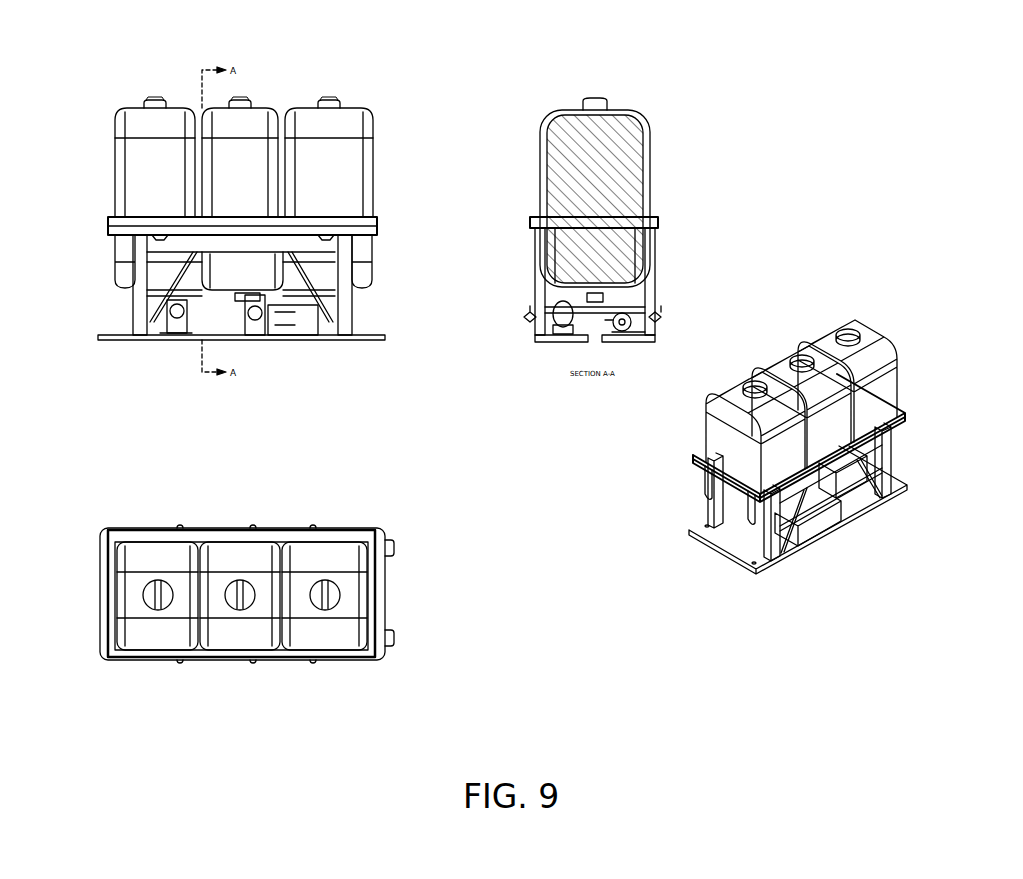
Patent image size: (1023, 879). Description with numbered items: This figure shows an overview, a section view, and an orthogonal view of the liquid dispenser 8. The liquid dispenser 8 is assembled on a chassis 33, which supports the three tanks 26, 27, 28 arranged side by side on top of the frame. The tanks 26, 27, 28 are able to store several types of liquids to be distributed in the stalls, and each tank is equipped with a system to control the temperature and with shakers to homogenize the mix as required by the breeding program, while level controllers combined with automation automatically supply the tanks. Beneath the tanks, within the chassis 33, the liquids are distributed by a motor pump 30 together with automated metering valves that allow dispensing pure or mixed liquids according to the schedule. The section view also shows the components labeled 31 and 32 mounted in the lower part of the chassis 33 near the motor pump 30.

The liquid dispenser 8 is at (115, 110).
The chassis 33 is at (112, 232).
The motor pump 30 is at (538, 340).
The pump 31 is at (650, 313).
The valve 32 is at (662, 320).
The tank 26 is at (145, 538).
The tank 27 is at (232, 538).
The tank 28 is at (338, 538).